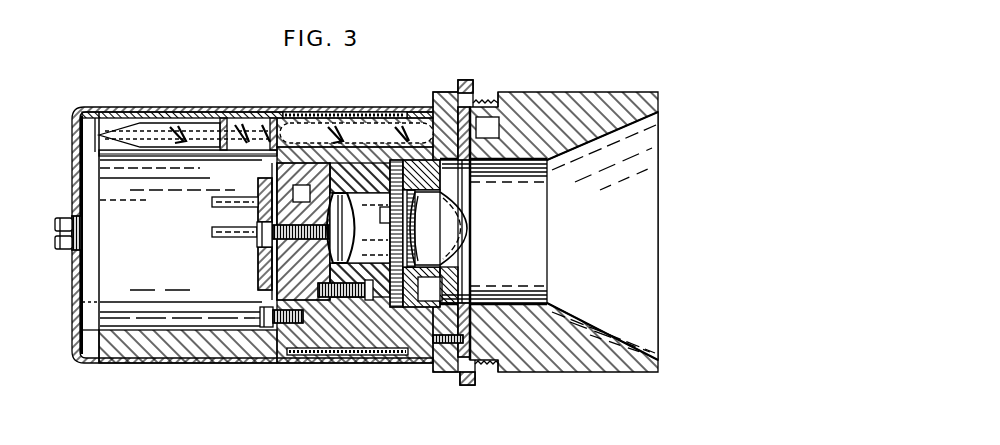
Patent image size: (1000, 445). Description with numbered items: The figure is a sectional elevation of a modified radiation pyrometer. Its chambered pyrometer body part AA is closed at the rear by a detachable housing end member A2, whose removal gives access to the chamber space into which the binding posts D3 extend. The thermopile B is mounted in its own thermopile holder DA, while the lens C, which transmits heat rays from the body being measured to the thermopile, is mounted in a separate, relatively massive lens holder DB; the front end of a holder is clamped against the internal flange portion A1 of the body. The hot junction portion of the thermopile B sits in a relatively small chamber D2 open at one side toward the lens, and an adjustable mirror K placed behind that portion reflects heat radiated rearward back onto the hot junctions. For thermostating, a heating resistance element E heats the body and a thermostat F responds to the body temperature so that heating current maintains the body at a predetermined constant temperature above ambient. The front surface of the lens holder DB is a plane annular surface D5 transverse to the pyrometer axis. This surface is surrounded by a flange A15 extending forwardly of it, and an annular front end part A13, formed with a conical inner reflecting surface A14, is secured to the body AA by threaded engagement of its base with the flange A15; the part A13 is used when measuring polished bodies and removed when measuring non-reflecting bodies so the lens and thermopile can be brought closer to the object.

The housing end member A2 is at (70, 281).
The pyrometer body part AA is at (180, 363).
The thermostat F is at (303, 107).
The heating resistance element E is at (368, 355).
The binding posts D3 is at (212, 203).
The thermopile holder DA is at (280, 268).
The adjustable mirror K is at (318, 200).
The thermopile B is at (362, 228).
The chamber D2 is at (398, 252).
The internal flange portion A1 is at (439, 274).
The lens C is at (466, 233).
The lens holder DB is at (468, 282).
The annular surface D5 is at (470, 141).
The flange A15 is at (483, 94).
The annular front end part A13 is at (545, 108).
The conical inner reflecting surface A14 is at (588, 150).